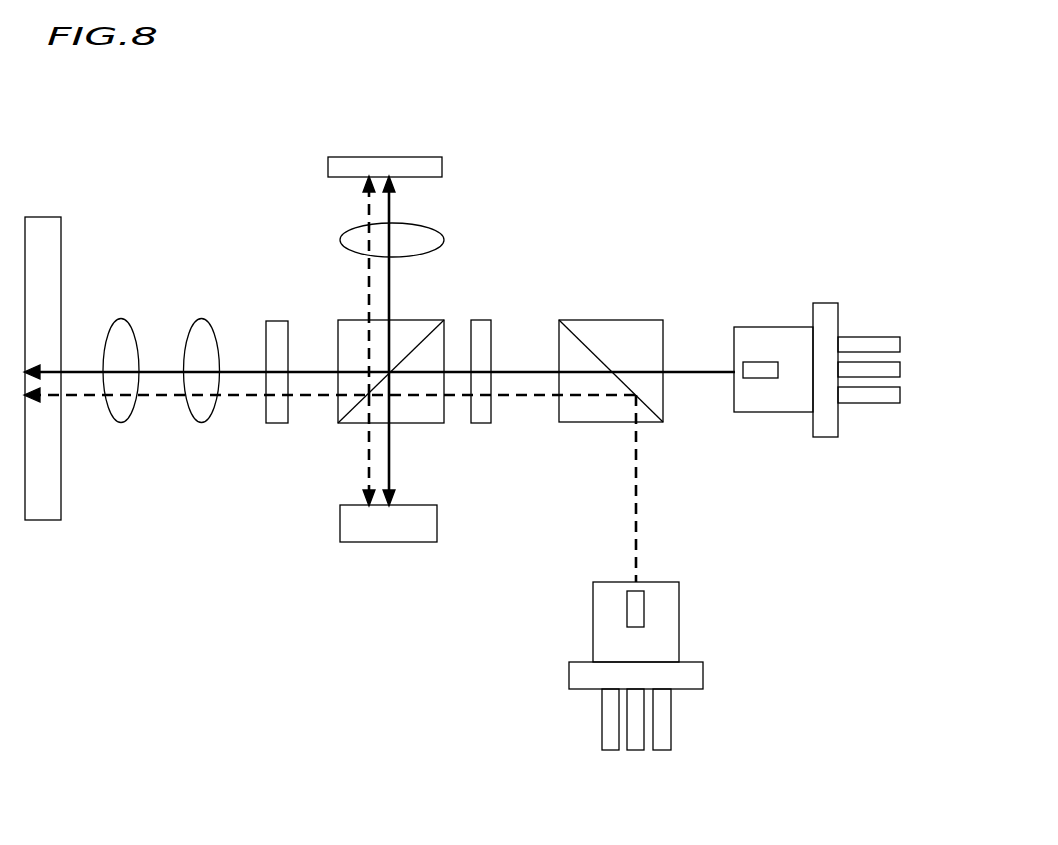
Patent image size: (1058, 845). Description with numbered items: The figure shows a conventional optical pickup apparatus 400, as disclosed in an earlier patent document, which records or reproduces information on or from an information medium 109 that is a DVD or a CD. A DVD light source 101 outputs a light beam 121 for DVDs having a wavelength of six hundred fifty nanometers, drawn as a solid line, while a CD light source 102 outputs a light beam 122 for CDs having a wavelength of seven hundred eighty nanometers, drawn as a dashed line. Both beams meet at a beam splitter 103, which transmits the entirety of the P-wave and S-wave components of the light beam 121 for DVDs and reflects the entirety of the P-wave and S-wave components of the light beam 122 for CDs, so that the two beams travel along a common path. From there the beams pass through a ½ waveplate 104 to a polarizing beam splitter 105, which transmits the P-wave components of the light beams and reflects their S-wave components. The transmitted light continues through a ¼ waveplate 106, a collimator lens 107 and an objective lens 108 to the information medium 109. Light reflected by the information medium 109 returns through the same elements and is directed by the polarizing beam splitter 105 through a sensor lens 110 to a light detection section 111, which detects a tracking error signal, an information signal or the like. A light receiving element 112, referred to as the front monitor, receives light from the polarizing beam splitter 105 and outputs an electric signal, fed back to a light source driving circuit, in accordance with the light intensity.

The optical pickup apparatus 400 is at (664, 139).
The DVD light source 101 is at (829, 303).
The CD light source 102 is at (628, 718).
The beam splitter 103 is at (620, 320).
The ½ waveplate 104 is at (485, 320).
The polarizing beam splitter 105 is at (402, 423).
The ¼ waveplate 106 is at (272, 423).
The collimator lens 107 is at (196, 423).
The objective lens 108 is at (120, 423).
The information medium 109 is at (43, 521).
The sensor lens 110 is at (340, 240).
The light detection section 111 is at (442, 170).
The light receiving element 112 is at (339, 522).
The light beam for DVDs 121 is at (697, 370).
The light beam for CDs 122 is at (638, 508).